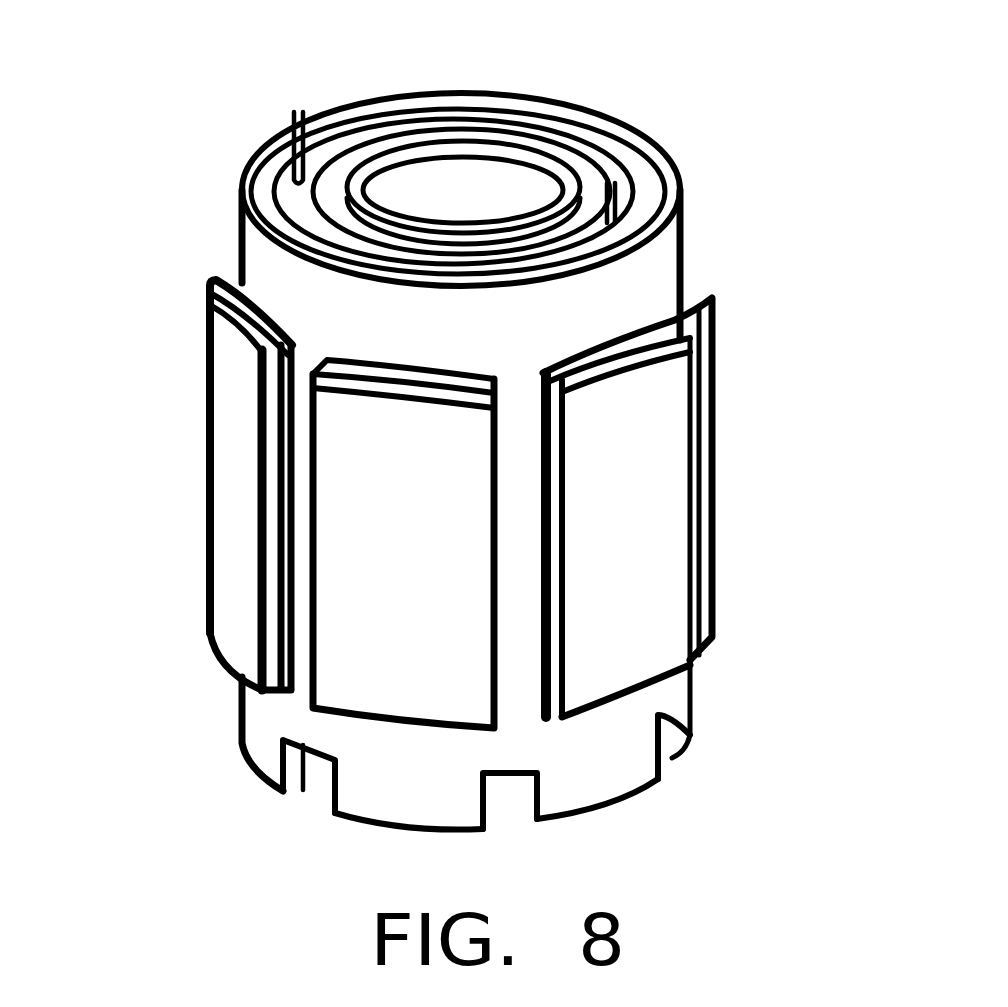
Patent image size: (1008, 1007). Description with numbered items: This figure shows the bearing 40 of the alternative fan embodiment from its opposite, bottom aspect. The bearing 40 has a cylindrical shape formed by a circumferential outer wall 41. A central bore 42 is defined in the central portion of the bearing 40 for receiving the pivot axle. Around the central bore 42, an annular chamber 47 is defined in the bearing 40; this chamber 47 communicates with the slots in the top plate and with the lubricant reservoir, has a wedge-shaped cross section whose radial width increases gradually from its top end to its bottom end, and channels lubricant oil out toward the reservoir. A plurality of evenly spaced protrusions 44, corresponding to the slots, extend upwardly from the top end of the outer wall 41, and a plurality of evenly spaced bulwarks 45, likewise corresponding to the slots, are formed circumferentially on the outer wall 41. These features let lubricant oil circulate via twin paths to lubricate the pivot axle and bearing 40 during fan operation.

The bearing 40 is at (458, 445).
The circumferential outer wall 41 is at (650, 277).
The central bore 42 is at (445, 181).
The protrusions 44 is at (305, 788).
The bulwarks 45 is at (236, 470).
The annular chamber 47 is at (298, 116).